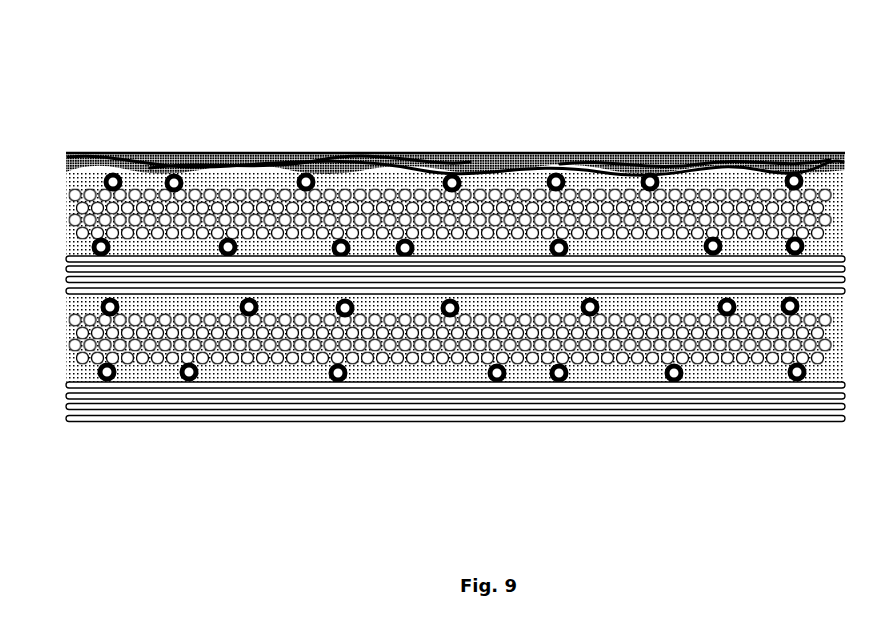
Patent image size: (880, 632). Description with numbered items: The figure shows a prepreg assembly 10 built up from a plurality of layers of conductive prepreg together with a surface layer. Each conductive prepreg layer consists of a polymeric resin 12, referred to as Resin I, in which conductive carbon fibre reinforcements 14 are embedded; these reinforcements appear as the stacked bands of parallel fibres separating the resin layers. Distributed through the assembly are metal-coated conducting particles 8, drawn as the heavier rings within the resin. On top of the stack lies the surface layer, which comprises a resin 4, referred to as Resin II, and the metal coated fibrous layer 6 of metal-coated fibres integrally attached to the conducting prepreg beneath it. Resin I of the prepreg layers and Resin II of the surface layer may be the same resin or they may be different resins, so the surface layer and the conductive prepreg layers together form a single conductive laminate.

The prepreg assembly 10 is at (455, 268).
The resin surface layer 4 is at (748, 149).
The metal-coated fibrous layer 6 is at (525, 156).
The metal-coated conducting particles 8 is at (556, 181).
The polymeric resin 12 is at (713, 378).
The conductive carbon fibre reinforcements 14 is at (233, 367).